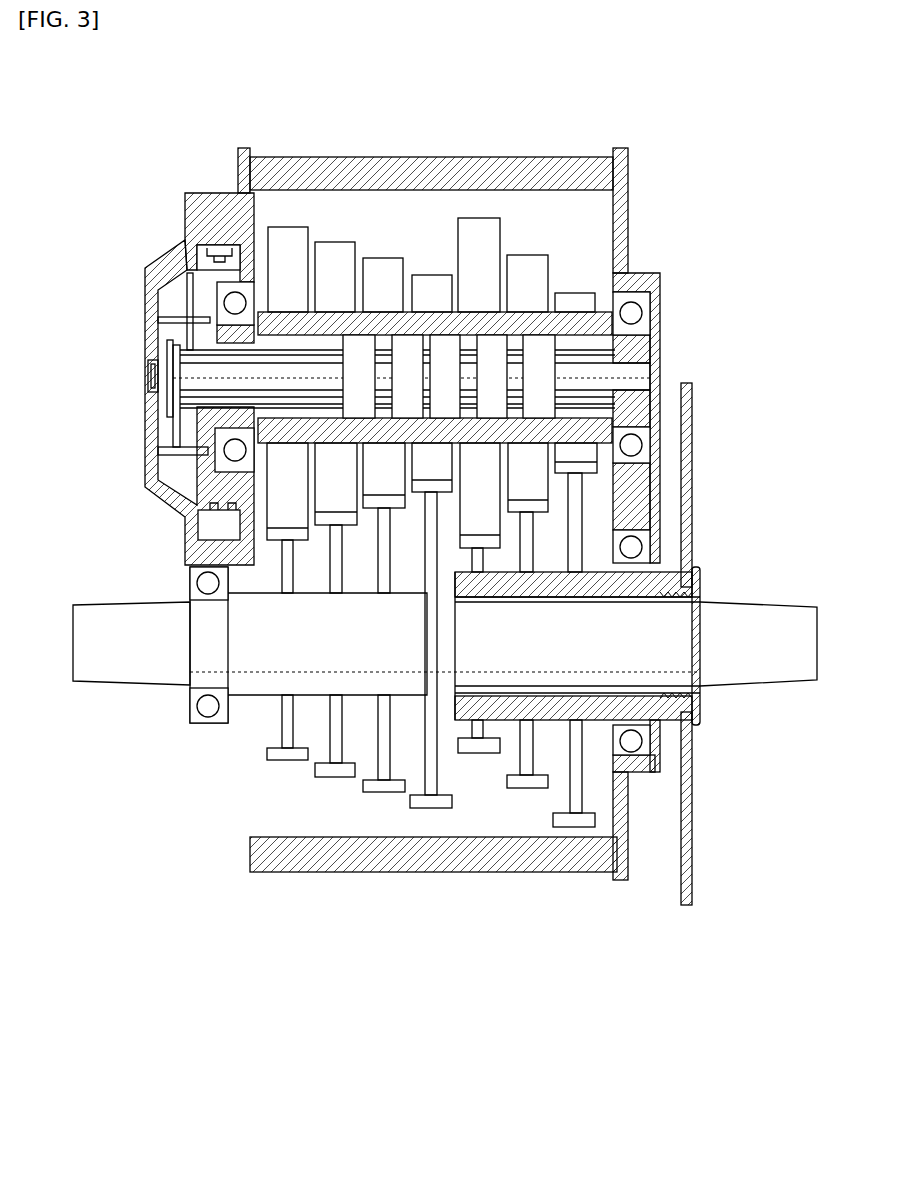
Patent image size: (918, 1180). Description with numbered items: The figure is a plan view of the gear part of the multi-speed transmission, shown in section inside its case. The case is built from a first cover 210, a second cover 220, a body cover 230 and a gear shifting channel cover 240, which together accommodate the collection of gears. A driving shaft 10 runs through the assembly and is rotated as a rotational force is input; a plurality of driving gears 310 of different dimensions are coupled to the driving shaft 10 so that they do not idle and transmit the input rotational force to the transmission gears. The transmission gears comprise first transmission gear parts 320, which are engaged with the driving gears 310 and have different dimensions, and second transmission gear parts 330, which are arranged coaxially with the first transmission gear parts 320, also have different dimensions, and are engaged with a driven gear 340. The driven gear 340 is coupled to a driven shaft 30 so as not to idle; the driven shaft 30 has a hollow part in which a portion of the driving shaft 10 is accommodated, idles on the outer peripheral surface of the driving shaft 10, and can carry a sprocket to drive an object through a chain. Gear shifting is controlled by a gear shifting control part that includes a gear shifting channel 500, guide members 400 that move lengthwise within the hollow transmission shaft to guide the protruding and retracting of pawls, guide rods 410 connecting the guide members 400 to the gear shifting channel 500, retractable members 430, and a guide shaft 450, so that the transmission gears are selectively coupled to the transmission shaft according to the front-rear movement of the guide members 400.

The driving shaft 10 is at (124, 670).
The driven shaft 30 is at (660, 566).
The first cover 210 is at (222, 193).
The second cover 220 is at (630, 210).
The body cover 230 is at (417, 163).
The gear shifting channel cover 240 is at (143, 425).
The driving gears 310 is at (427, 808).
The first transmission gear parts 320 is at (430, 275).
The second transmission gear parts 330 is at (575, 293).
The driven gear 340 is at (575, 827).
The guide members 400 is at (540, 398).
The guide rods 410 is at (186, 300).
The retractable members 430 is at (148, 333).
The guide shaft 450 is at (630, 372).
The gear shifting channel 500 is at (152, 305).